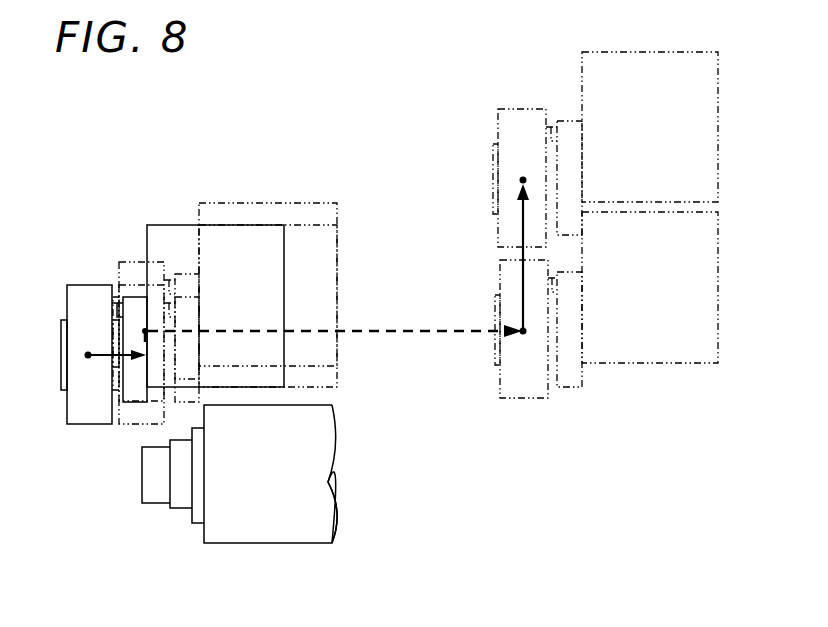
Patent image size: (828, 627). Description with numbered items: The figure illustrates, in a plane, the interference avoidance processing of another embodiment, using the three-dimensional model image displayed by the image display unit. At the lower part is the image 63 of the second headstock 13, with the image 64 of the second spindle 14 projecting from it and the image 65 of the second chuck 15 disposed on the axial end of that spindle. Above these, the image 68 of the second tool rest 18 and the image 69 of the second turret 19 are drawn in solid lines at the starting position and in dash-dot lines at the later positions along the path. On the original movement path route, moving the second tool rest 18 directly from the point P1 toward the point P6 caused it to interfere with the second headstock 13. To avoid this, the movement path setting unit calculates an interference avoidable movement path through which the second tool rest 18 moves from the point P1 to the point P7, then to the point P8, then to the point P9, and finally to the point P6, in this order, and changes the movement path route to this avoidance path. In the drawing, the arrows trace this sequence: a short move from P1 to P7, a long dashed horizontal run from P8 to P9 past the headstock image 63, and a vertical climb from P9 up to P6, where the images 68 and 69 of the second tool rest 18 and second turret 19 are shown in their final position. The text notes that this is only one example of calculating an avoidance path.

The second headstock 13 is at (330, 482).
The second spindle 14 is at (178, 510).
The second chuck 15 is at (142, 502).
The second tool rest 18 is at (657, 420).
The second turret 19 is at (498, 303).
The image of the second headstock 63 is at (311, 474).
The image of the second spindle 64 is at (176, 521).
The image of the second chuck 65 is at (118, 515).
The image of the second tool rest 68 is at (425, 254).
The image of the second turret 69 is at (299, 307).
The point P1 is at (88, 357).
The point P6 is at (523, 181).
The point P7 is at (146, 358).
The point P8 is at (147, 331).
The point P9 is at (523, 333).